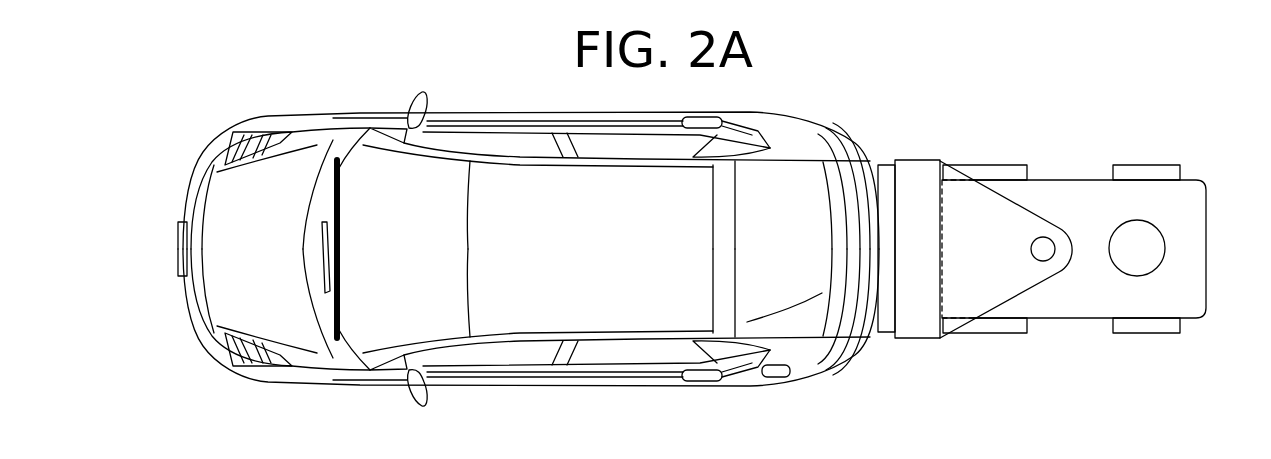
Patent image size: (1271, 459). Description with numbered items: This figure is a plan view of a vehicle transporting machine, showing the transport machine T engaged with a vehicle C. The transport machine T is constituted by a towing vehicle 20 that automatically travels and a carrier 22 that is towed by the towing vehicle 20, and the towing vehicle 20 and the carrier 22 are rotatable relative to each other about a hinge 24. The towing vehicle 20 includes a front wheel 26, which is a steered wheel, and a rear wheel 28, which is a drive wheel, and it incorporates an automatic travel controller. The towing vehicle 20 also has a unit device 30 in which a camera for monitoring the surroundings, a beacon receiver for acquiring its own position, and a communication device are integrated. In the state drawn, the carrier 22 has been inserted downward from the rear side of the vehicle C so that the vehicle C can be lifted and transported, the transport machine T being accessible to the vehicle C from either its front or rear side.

The vehicle C is at (362, 163).
The transport machine T is at (1071, 248).
The towing vehicle 20 is at (1102, 298).
The carrier 22 is at (901, 353).
The hinge 24 is at (1046, 258).
The front wheel 26 is at (1172, 337).
The rear wheel 28 is at (995, 338).
The unit device 30 is at (1157, 246).